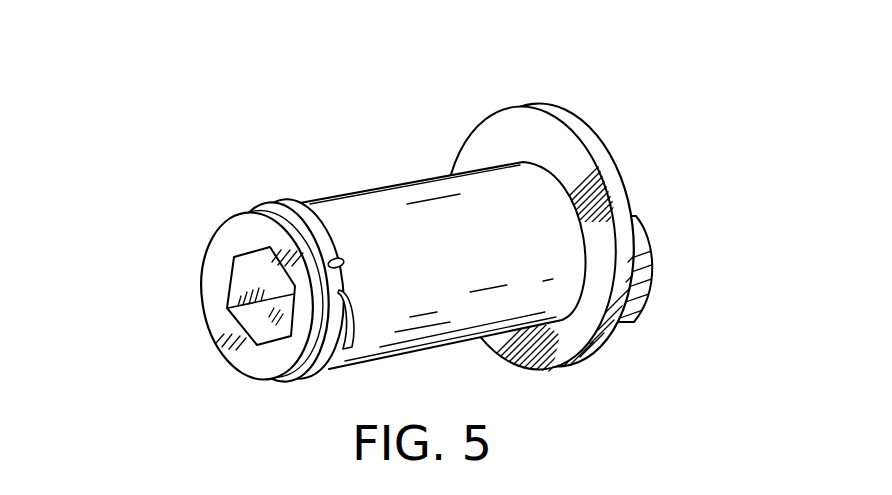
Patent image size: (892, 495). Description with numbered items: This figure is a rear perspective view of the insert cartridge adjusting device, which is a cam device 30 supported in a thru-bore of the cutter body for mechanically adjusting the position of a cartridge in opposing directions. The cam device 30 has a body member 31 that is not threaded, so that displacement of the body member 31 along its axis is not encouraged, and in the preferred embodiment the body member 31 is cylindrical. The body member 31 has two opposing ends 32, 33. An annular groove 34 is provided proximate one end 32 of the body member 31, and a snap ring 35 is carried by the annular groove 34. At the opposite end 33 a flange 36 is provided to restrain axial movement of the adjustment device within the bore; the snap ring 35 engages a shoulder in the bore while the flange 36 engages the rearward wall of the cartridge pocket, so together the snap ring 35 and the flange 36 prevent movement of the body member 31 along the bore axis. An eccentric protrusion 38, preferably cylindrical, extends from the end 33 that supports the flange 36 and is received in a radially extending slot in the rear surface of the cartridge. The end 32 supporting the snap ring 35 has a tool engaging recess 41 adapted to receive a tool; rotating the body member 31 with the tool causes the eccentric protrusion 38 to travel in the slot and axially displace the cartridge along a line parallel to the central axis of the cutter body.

The cam device 30 is at (441, 221).
The body member 31 is at (420, 163).
The end 32 is at (258, 253).
The opposite end 33 is at (553, 214).
The annular groove 34 is at (345, 265).
The snap ring 35 is at (331, 249).
The flange 36 is at (588, 145).
The eccentric protrusion 38 is at (655, 270).
The tool engaging recess 41 is at (237, 286).